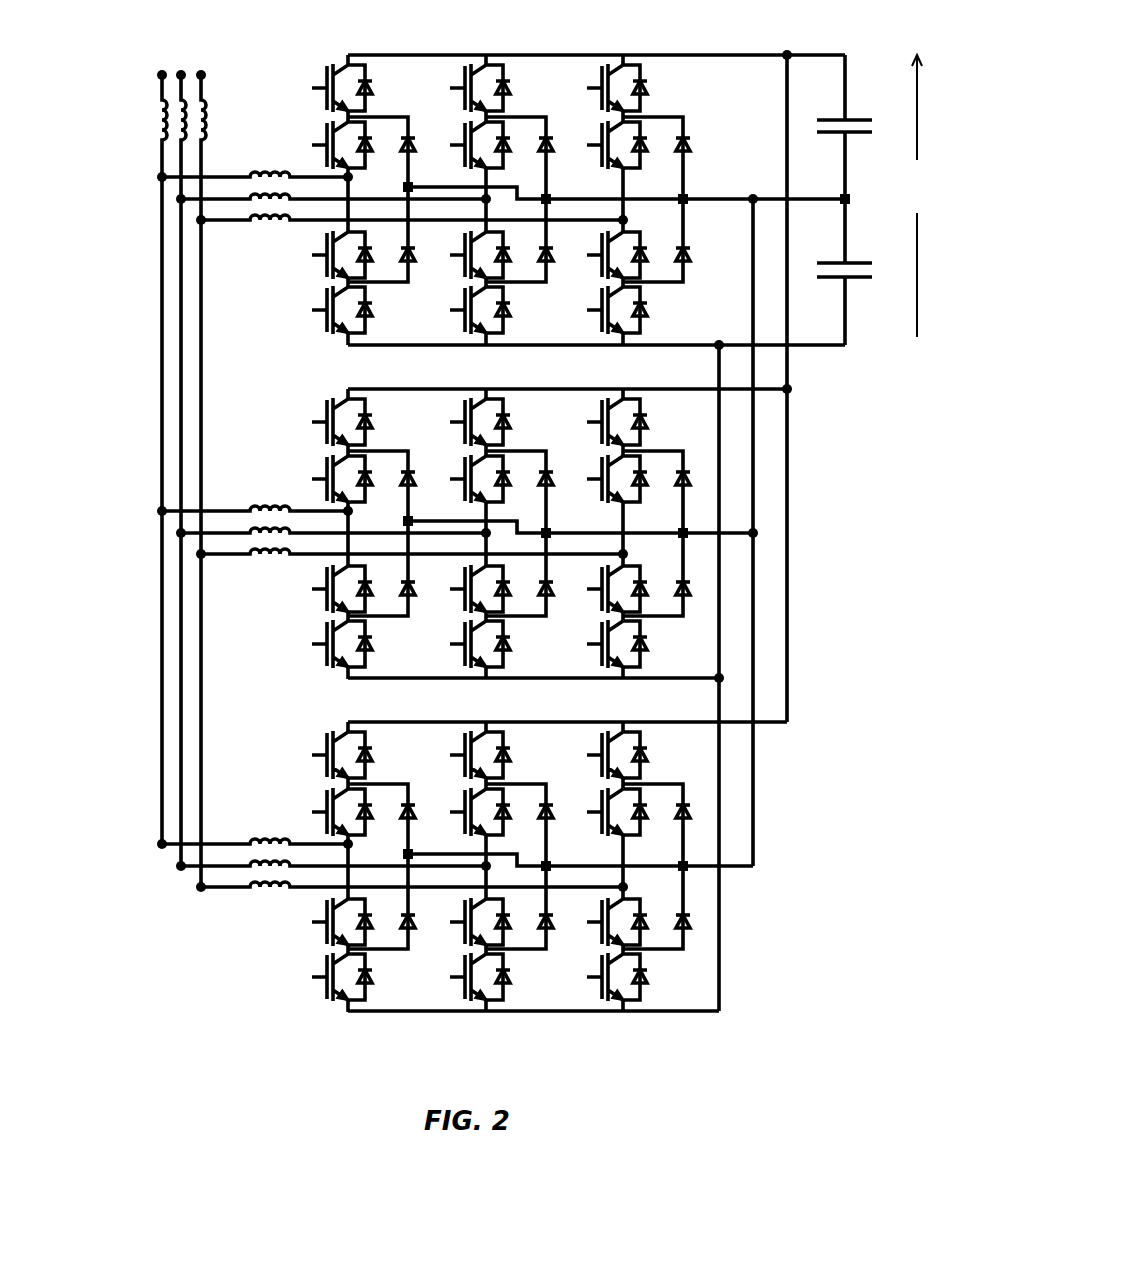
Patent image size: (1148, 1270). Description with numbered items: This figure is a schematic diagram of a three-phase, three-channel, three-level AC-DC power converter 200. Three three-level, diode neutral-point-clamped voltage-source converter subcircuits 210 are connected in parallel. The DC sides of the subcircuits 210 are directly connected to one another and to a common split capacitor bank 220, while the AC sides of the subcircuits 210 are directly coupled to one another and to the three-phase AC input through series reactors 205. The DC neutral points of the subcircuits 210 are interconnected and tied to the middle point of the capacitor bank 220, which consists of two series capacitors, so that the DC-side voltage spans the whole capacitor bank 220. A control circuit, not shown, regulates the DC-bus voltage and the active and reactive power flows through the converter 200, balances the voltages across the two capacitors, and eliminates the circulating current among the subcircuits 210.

The AC-DC power converter 200 is at (498, 507).
The series reactors 205 is at (265, 248).
The voltage-source converter subcircuits 210 is at (684, 19).
The split capacitor bank 220 is at (861, 343).